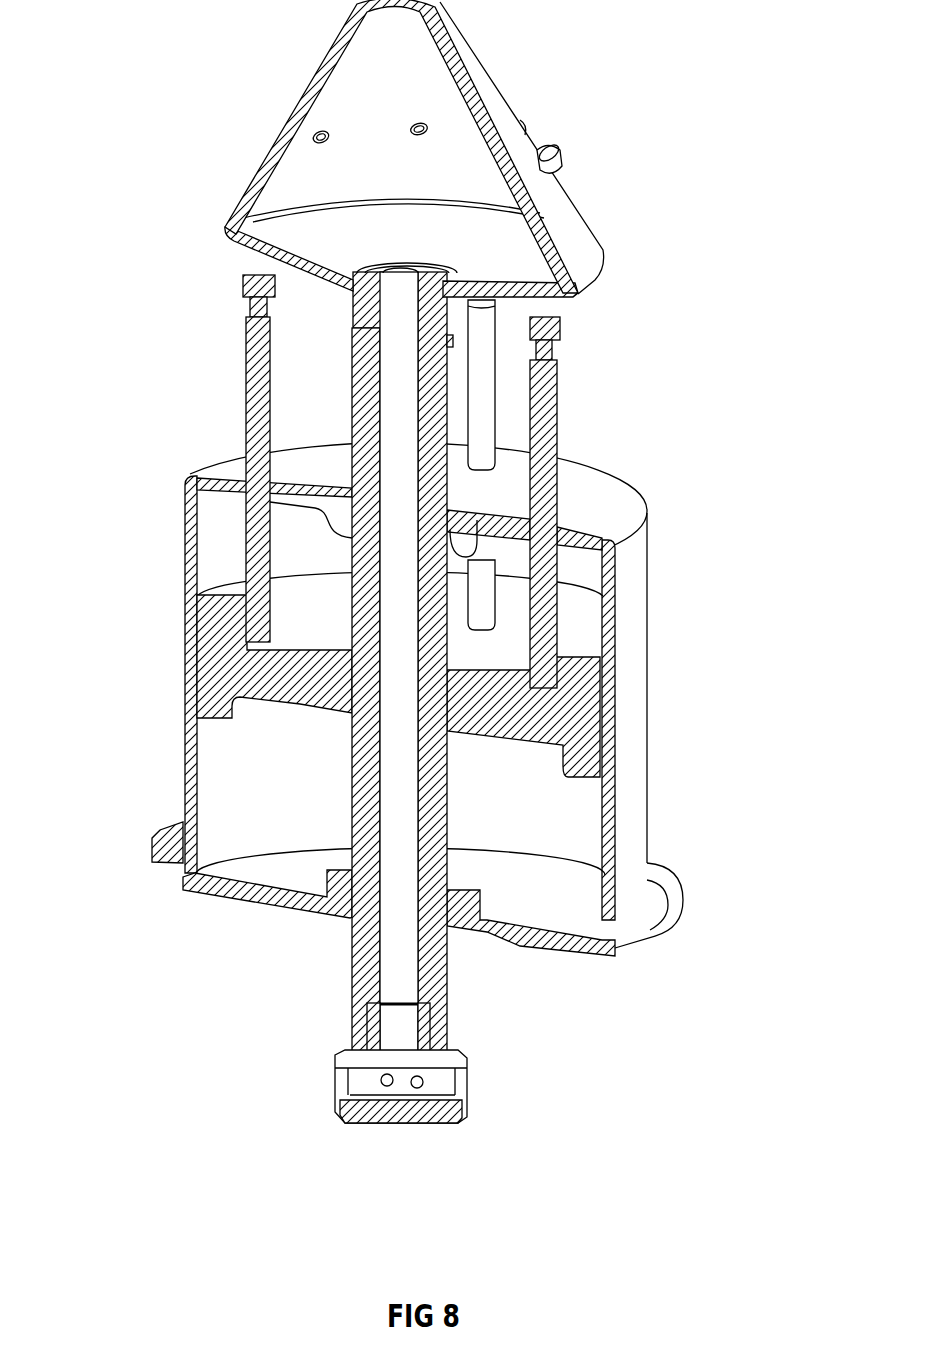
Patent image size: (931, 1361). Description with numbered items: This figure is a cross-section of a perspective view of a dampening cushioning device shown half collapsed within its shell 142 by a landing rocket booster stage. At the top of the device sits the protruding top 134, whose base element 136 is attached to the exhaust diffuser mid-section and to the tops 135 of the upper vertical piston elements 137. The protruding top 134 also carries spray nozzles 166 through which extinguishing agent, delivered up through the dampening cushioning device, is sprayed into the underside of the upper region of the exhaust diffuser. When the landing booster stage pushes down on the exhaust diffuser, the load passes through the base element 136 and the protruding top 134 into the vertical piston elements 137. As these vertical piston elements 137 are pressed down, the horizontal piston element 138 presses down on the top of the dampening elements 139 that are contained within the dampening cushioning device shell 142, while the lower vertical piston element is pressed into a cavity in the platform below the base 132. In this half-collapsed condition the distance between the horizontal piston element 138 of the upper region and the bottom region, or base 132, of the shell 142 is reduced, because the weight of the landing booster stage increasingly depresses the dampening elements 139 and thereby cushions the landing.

The base 132 is at (530, 903).
The protruding top 134 is at (570, 225).
The tops of upper vertical piston elements 135 is at (443, 338).
The base element 136 is at (290, 238).
The vertical piston elements 137 is at (247, 393).
The horizontal piston element 138 is at (347, 780).
The dampening elements 139 is at (263, 805).
The shell 142 is at (185, 593).
The spray nozzles 166 is at (563, 158).